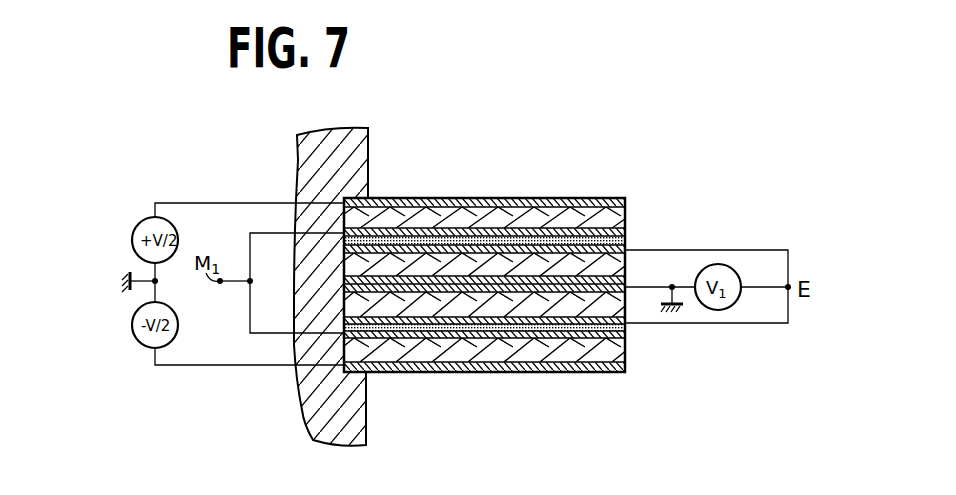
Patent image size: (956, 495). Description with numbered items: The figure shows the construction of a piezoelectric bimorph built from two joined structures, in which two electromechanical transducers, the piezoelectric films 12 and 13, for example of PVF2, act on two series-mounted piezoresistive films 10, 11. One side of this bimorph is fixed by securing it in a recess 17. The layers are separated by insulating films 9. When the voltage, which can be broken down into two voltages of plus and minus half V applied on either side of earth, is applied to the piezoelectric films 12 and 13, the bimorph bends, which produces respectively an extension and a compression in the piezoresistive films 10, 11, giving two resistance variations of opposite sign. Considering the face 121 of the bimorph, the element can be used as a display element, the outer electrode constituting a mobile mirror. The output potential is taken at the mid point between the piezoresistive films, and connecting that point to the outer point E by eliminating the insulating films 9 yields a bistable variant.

The recess 17 is at (368, 150).
The face of the bimorph 121 is at (457, 193).
The insulating film 9 is at (558, 242).
The piezoresistive film 10 is at (625, 212).
The piezoresistive film 11 is at (612, 353).
The piezoelectric film 12 is at (624, 268).
The piezoelectric film 13 is at (612, 307).